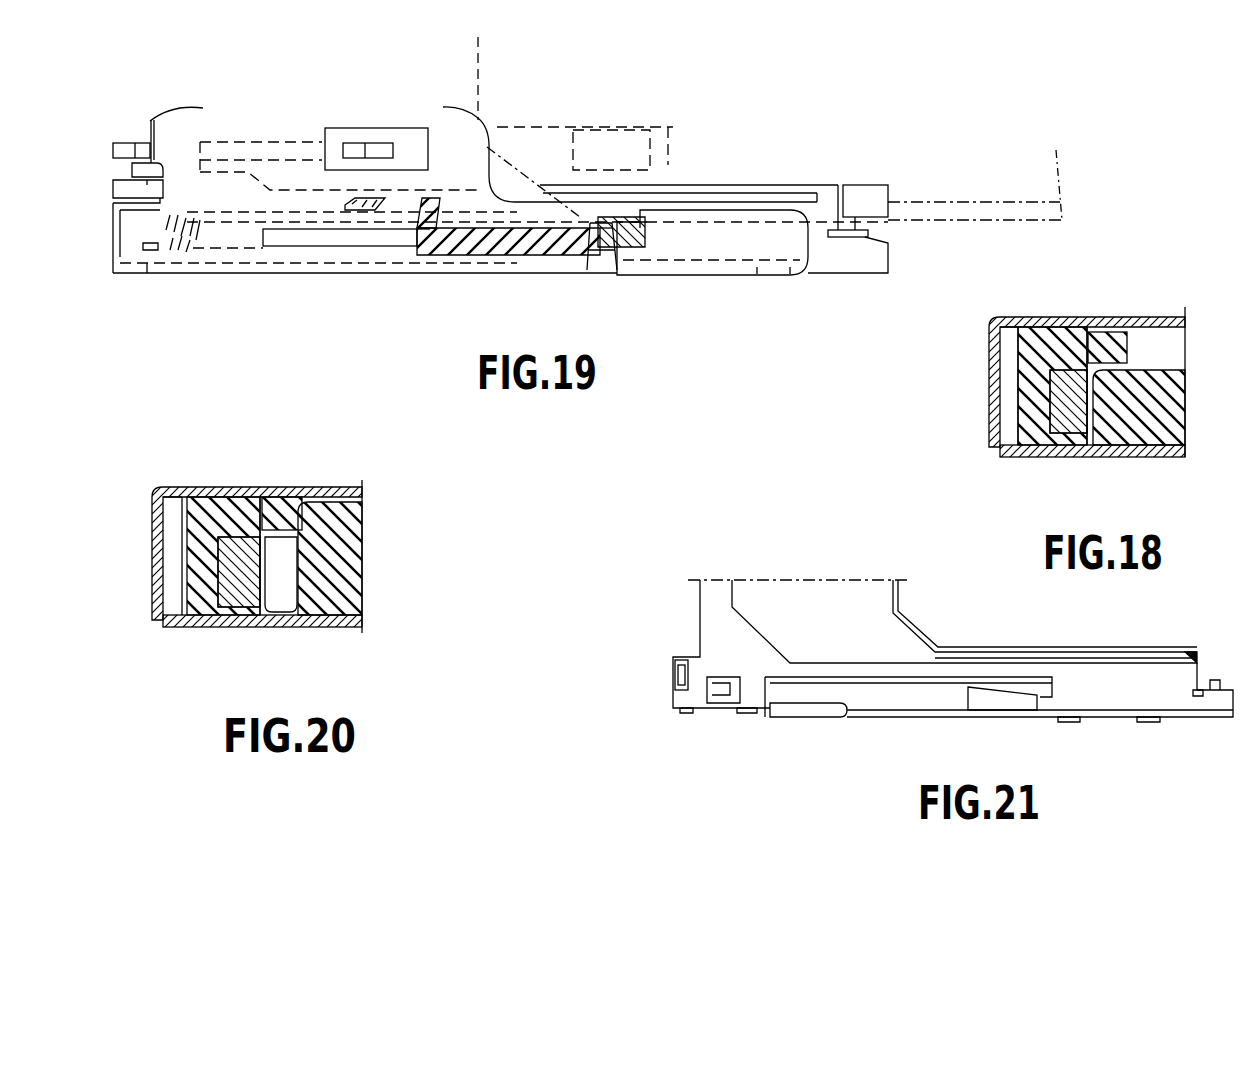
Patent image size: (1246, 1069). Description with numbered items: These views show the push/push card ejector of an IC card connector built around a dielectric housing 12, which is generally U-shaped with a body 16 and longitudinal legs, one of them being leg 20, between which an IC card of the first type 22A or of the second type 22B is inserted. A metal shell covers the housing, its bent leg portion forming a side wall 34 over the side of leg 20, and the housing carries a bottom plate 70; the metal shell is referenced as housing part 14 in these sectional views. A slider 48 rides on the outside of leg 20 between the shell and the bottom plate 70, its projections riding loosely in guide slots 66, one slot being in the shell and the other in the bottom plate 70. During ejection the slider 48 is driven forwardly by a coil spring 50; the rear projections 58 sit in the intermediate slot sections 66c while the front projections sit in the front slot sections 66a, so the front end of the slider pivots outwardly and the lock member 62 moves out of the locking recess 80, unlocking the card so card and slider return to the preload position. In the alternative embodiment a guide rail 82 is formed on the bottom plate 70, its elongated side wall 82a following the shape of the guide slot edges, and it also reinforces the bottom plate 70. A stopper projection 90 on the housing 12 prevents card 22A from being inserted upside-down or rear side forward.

In FIG. 18, the dielectric housing 12 is at (1138, 458).
In FIG. 20, the dielectric housing 12 is at (340, 637).
In FIG. 21, the dielectric housing 12 is at (850, 597).
In FIG. 18, the housing 14 is at (1147, 311).
In FIG. 20, the housing 14 is at (347, 483).
In FIG. 21, the body 16 is at (773, 602).
In FIG. 19, the leg 20 is at (847, 250).
In FIG. 21, the leg 20 is at (1150, 690).
In FIG. 19, the IC card of the first type 22A is at (1023, 163).
In FIG. 20, the IC card of the first type 22A is at (350, 553).
In FIG. 18, the IC card of the second type 22B is at (1153, 443).
In FIG. 19, the side wall 34 is at (725, 275).
In FIG. 18, the side wall 34 is at (989, 372).
In FIG. 20, the side wall 34 is at (152, 545).
In FIG. 19, the slider 48 is at (510, 253).
In FIG. 18, the slider 48 is at (1013, 413).
In FIG. 20, the slider 48 is at (180, 570).
In FIG. 19, the coil spring 50 is at (167, 278).
In FIG. 19, the projection 58 is at (417, 243).
In FIG. 19, the lock member 62 is at (620, 243).
In FIG. 18, the lock member 62 is at (1070, 453).
In FIG. 20, the lock member 62 is at (247, 597).
In FIG. 19, the guide slot 66 is at (333, 238).
In FIG. 19, the front slot section 66a is at (612, 250).
In FIG. 19, the intermediate slot section 66c is at (457, 243).
In FIG. 18, the bottom plate 70 is at (1007, 453).
In FIG. 20, the bottom plate 70 is at (183, 623).
In FIG. 21, the bottom plate 70 is at (902, 700).
In FIG. 20, the locking recess 80 is at (287, 603).
In FIG. 21, the guide rail 82 is at (1012, 687).
In FIG. 21, the elongated side wall 82a is at (968, 687).
In FIG. 18, the stopper projection 90 is at (1100, 325).
In FIG. 20, the stopper projection 90 is at (290, 495).